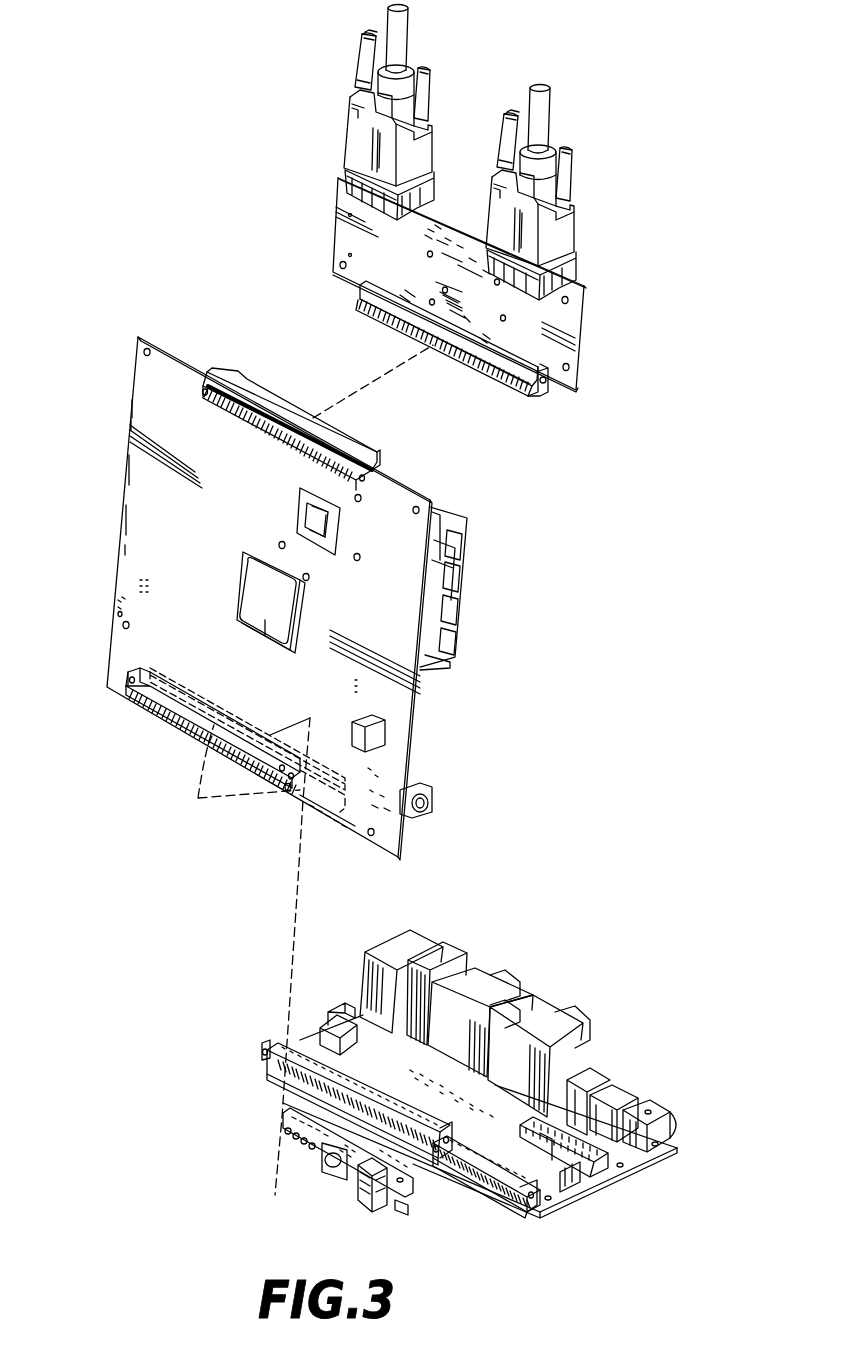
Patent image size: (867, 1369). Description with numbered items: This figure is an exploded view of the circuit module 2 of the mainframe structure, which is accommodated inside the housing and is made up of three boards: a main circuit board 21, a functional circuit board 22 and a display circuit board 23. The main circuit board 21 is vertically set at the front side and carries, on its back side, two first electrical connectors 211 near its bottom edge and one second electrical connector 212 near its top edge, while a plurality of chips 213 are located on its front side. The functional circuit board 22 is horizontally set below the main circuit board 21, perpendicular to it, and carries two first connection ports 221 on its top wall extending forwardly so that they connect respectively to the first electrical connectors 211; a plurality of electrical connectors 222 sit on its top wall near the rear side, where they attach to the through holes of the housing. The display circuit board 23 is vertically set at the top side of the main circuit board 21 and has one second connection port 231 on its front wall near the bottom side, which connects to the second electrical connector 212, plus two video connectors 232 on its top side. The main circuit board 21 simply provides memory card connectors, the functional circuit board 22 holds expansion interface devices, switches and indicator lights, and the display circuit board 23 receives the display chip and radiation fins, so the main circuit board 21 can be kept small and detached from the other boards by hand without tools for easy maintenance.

The circuit module 2 is at (238, 956).
The main circuit board 21 is at (160, 403).
The first electrical connector 211 is at (240, 752).
The second electrical connector 212 is at (260, 393).
The chips 213 is at (306, 520).
The functional circuit board 22 is at (590, 1190).
The first connection port 221 is at (282, 1078).
The electrical connectors 222 is at (615, 1098).
The display circuit board 23 is at (383, 238).
The second connection port 231 is at (364, 302).
The video connectors 232 is at (344, 183).